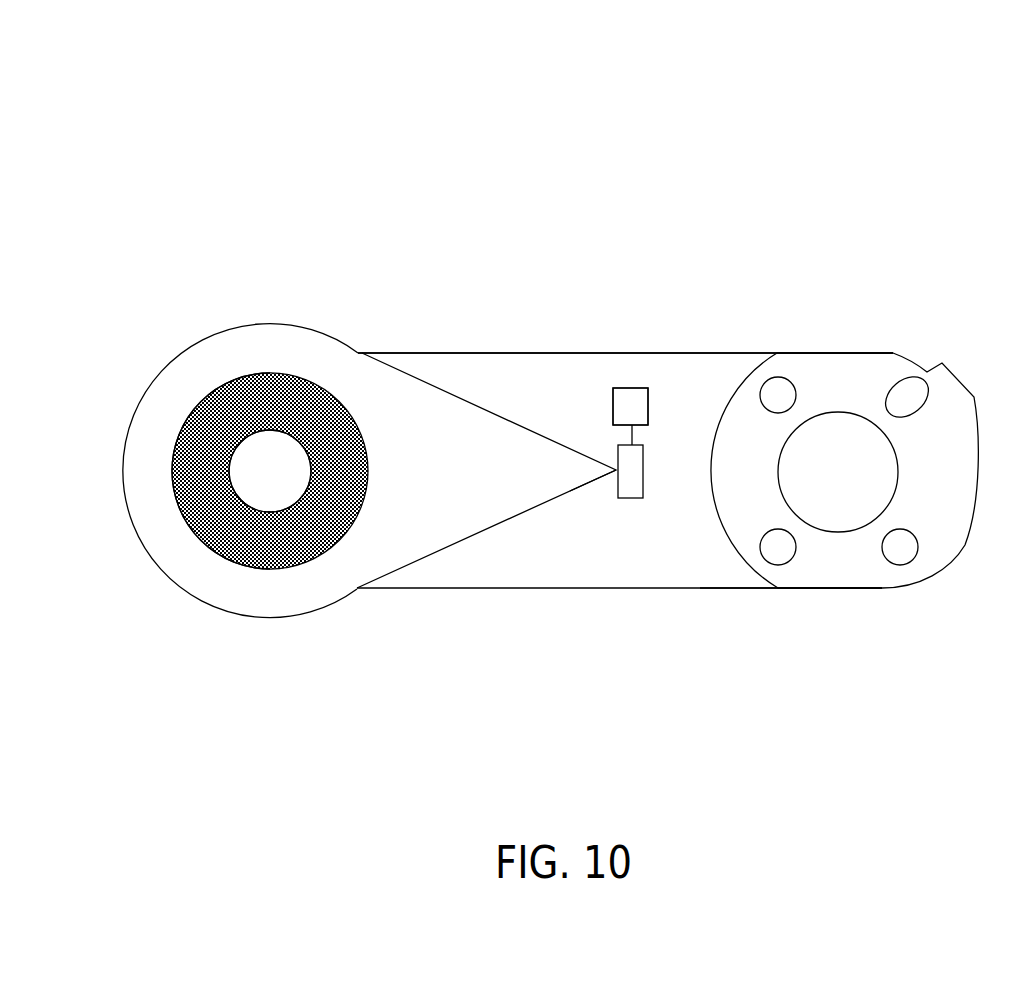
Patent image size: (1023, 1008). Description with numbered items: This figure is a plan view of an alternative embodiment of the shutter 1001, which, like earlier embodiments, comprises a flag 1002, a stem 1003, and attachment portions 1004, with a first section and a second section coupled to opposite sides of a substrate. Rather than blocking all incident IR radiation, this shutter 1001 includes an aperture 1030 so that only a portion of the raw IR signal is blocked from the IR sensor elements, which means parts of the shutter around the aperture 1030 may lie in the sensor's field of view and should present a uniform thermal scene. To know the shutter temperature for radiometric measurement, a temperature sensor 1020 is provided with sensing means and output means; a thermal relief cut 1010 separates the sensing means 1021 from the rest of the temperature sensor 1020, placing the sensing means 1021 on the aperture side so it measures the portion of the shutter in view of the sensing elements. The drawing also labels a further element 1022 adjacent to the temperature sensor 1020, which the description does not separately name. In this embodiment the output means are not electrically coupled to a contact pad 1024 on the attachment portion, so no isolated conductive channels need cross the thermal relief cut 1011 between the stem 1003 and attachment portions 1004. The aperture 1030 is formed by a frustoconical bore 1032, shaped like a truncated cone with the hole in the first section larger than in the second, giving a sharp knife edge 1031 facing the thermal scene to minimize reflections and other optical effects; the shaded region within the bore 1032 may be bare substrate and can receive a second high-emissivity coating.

The shutter 1001 is at (393, 212).
The flag 1002 is at (220, 333).
The stem 1003 is at (475, 352).
The attachment portions 1004 is at (832, 350).
The thermal relief cut 1010 is at (433, 557).
The thermal relief cut 1011 is at (753, 572).
The temperature sensor 1020 is at (637, 470).
The sensing means 1021 is at (582, 470).
The magnet 1022 is at (620, 402).
The contact pad 1024 is at (643, 390).
The aperture 1030 is at (270, 473).
The knife edge 1031 is at (287, 428).
The frustoconical bore 1032 is at (223, 420).